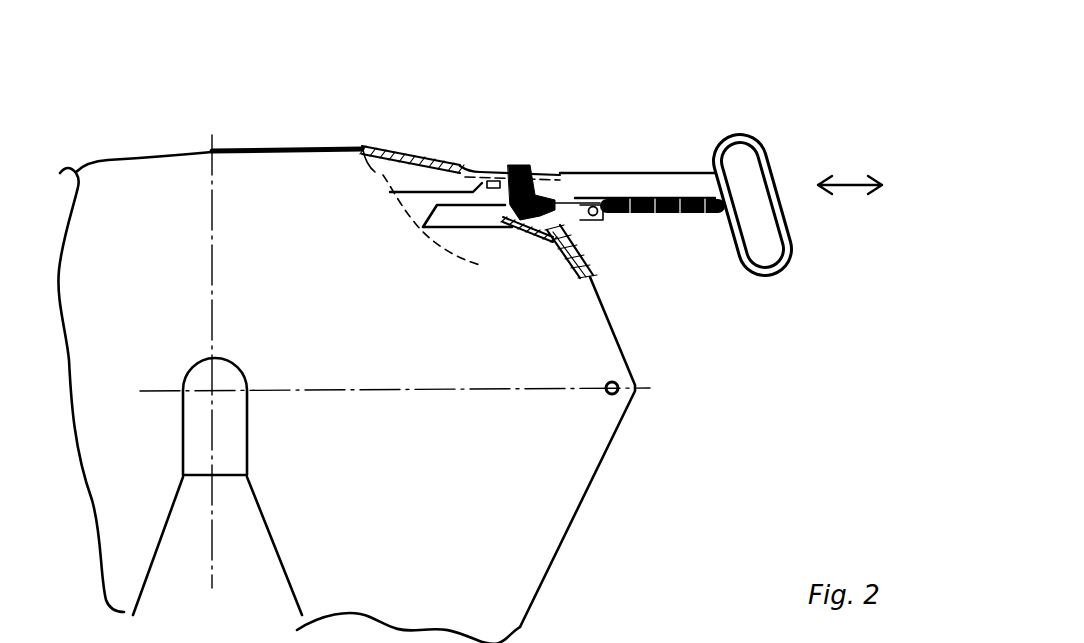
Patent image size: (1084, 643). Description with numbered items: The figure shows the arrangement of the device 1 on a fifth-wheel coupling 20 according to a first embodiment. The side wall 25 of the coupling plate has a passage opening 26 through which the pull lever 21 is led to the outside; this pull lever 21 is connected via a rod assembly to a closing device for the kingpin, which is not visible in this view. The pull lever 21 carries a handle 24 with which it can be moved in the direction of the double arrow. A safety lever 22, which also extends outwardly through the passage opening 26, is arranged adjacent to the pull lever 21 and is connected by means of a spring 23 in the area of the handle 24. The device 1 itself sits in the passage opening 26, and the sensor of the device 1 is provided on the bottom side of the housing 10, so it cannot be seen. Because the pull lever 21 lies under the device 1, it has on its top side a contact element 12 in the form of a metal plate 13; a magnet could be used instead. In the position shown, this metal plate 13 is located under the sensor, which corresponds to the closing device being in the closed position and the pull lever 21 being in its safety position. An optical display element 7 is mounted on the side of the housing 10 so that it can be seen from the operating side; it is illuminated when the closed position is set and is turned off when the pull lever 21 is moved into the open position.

The device 1 is at (548, 186).
The optical display element 7 is at (590, 173).
The housing 10 is at (518, 178).
The contact element 12 is at (557, 178).
The metal plate 13 is at (643, 100).
The fifth-wheel coupling 20 is at (550, 487).
The pull lever 21 is at (657, 173).
The safety lever 22 is at (592, 232).
The spring 23 is at (688, 216).
The handle 24 is at (793, 232).
The side wall 25 is at (457, 162).
The passage opening 26 is at (527, 172).